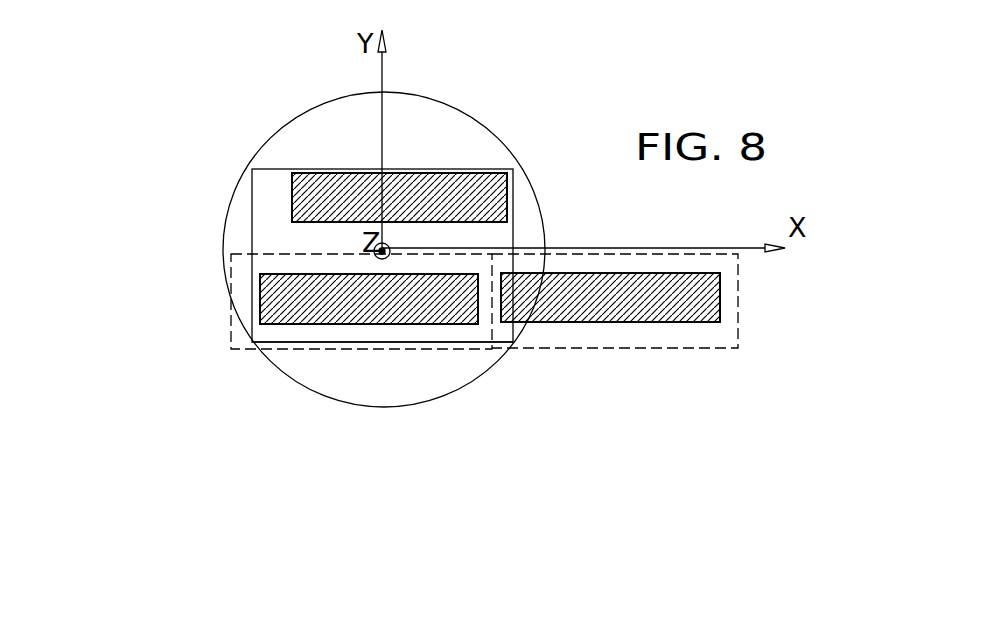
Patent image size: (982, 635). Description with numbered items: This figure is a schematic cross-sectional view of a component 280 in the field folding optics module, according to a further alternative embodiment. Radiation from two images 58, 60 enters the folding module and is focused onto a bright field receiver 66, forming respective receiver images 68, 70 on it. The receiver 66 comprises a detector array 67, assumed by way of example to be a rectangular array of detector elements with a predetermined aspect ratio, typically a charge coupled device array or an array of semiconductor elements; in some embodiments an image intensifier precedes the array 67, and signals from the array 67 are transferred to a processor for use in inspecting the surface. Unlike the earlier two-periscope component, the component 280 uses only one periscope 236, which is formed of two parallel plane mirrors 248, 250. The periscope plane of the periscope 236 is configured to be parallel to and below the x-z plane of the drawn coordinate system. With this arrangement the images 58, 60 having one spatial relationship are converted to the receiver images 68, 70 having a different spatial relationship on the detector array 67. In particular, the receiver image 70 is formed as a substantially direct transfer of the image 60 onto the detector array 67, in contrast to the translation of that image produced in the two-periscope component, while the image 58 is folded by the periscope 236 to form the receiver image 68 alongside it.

The image 58 is at (640, 323).
The image 60 is at (508, 183).
The bright field receiver 66 is at (392, 408).
The detector array 67 is at (288, 343).
The receiver image 68 is at (260, 300).
The receiver image 70 is at (292, 185).
The periscope 236 is at (787, 307).
The mirror 248 is at (713, 348).
The mirror 250 is at (231, 261).
The component 280 is at (145, 393).